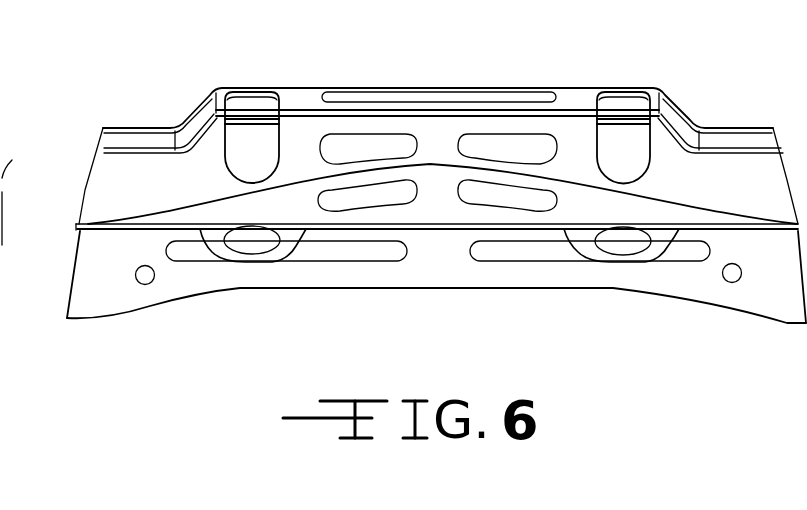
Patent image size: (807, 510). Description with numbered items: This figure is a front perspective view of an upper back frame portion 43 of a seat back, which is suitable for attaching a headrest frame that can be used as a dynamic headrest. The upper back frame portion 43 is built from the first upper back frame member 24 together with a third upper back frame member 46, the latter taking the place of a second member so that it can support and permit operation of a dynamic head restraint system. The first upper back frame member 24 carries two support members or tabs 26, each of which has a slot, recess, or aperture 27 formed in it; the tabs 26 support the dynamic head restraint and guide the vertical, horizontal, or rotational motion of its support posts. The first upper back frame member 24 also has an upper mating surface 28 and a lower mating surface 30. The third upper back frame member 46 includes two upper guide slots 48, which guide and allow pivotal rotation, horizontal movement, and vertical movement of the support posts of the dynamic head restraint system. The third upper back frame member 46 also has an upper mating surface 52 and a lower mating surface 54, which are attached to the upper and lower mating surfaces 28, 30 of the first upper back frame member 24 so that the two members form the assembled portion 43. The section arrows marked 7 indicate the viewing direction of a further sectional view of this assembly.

The section line indicator for FIG. 7 is at (255, 41).
The first upper back frame member 24 is at (403, 226).
The tabs 26 is at (244, 263).
The apertures 27 is at (264, 250).
The upper mating surface 28 is at (358, 88).
The lower mating surface 30 is at (415, 234).
The upper back frame portion 43 is at (435, 181).
The third upper back frame member 46 is at (97, 140).
The upper guide slots 48 is at (259, 91).
The upper mating surface 52 is at (485, 93).
The lower mating surface 54 is at (472, 230).